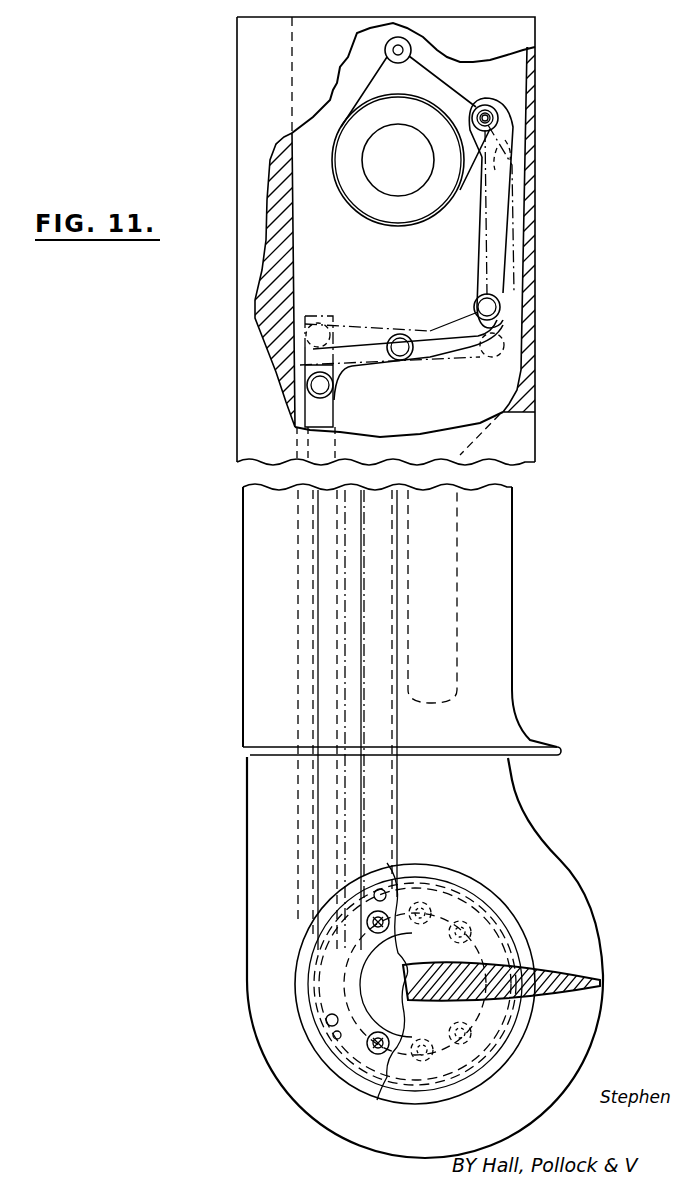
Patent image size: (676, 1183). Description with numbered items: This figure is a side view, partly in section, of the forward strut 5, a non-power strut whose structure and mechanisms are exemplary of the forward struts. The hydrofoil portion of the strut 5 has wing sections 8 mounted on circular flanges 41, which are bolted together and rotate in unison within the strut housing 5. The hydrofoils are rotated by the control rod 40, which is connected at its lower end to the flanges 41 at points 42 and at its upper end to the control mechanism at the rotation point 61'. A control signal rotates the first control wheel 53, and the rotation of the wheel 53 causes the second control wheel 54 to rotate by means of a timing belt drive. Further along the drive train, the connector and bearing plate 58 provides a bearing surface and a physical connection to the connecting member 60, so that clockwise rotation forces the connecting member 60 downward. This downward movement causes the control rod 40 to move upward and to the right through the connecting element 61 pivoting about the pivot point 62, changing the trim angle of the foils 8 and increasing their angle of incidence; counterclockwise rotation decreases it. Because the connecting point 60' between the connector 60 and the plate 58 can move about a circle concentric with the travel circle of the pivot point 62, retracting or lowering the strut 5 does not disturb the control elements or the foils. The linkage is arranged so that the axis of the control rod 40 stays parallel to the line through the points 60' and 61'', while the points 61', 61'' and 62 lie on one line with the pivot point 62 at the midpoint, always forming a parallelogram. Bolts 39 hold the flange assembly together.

The forward strut 5 is at (495, 577).
The wing section 8 is at (548, 972).
The screws 39 is at (497, 902).
The control rod 40 is at (317, 678).
The circular flange 41 is at (462, 1065).
The connection point 42 is at (333, 1037).
The first control wheel 53 is at (390, 205).
The second control wheel 54 is at (411, 46).
The connector and bearing plate 58 is at (473, 108).
The connecting member 60 is at (525, 213).
The connecting point 60' is at (531, 107).
The connecting element 61 is at (401, 356).
The rotation point 61' is at (340, 371).
The rotation point 61'' is at (528, 299).
The pivot point 62 is at (400, 337).